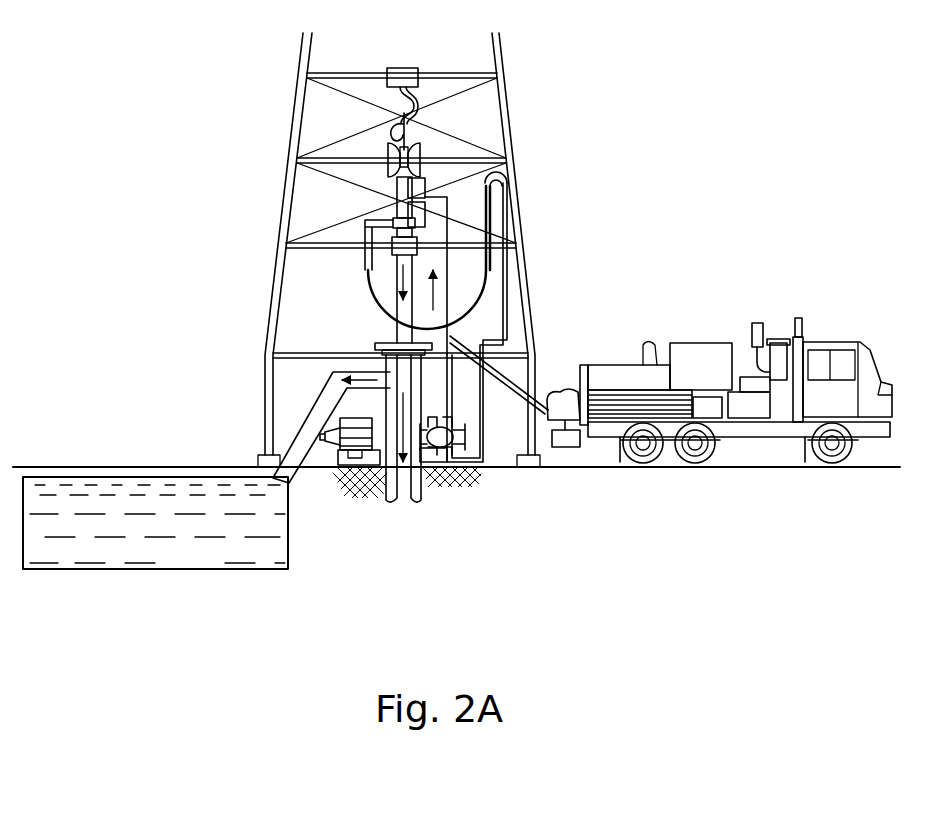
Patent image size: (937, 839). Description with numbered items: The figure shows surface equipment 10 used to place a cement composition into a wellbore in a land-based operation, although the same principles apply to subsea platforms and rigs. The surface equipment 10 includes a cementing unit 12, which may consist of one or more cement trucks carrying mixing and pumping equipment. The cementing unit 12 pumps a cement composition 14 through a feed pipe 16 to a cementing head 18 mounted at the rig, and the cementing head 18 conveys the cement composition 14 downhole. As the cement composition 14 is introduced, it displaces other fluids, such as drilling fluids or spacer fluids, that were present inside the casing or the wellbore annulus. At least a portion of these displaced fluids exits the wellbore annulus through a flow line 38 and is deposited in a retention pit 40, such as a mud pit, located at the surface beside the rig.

The surface equipment 10 is at (653, 83).
The cementing unit 12 is at (748, 450).
The cement composition 14 is at (392, 282).
The feed pipe 16 is at (515, 357).
The cementing head 18 is at (445, 149).
The flow line 38 is at (312, 424).
The retention pit 40 is at (160, 572).